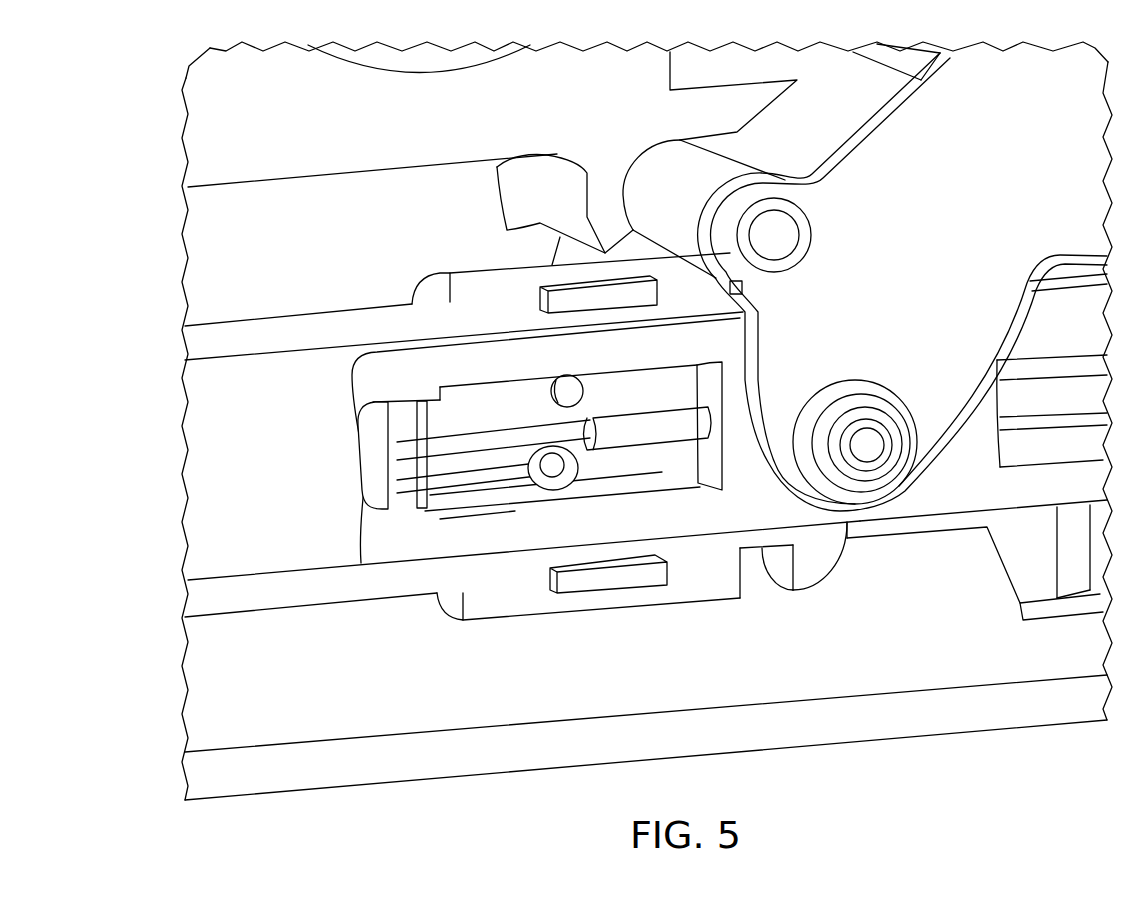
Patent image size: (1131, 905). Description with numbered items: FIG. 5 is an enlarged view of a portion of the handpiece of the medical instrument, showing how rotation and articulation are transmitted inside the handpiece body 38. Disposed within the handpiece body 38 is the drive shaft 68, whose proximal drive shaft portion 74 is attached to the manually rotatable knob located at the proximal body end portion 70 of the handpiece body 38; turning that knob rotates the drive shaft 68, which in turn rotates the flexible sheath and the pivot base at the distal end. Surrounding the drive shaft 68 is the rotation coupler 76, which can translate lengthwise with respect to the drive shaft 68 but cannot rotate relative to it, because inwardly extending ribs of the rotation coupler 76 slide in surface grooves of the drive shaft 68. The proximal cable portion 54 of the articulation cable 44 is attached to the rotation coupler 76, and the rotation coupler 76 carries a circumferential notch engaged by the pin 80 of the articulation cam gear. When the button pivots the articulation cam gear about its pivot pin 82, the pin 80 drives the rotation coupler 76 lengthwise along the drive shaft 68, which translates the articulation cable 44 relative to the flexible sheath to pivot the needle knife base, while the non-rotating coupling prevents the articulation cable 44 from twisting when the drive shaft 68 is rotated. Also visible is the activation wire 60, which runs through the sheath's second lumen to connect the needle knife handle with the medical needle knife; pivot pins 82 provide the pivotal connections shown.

The handpiece body 38 is at (427, 783).
The articulation cable 44 is at (483, 487).
The proximal cable portion 54 is at (516, 479).
The activation wire 60 is at (628, 434).
The drive shaft 68 is at (203, 516).
The proximal body end portion 70 is at (974, 216).
The proximal drive shaft portion 74 is at (750, 512).
The rotation coupler 76 is at (491, 612).
The pin 80 is at (871, 449).
The pivot pins 82 is at (792, 238).